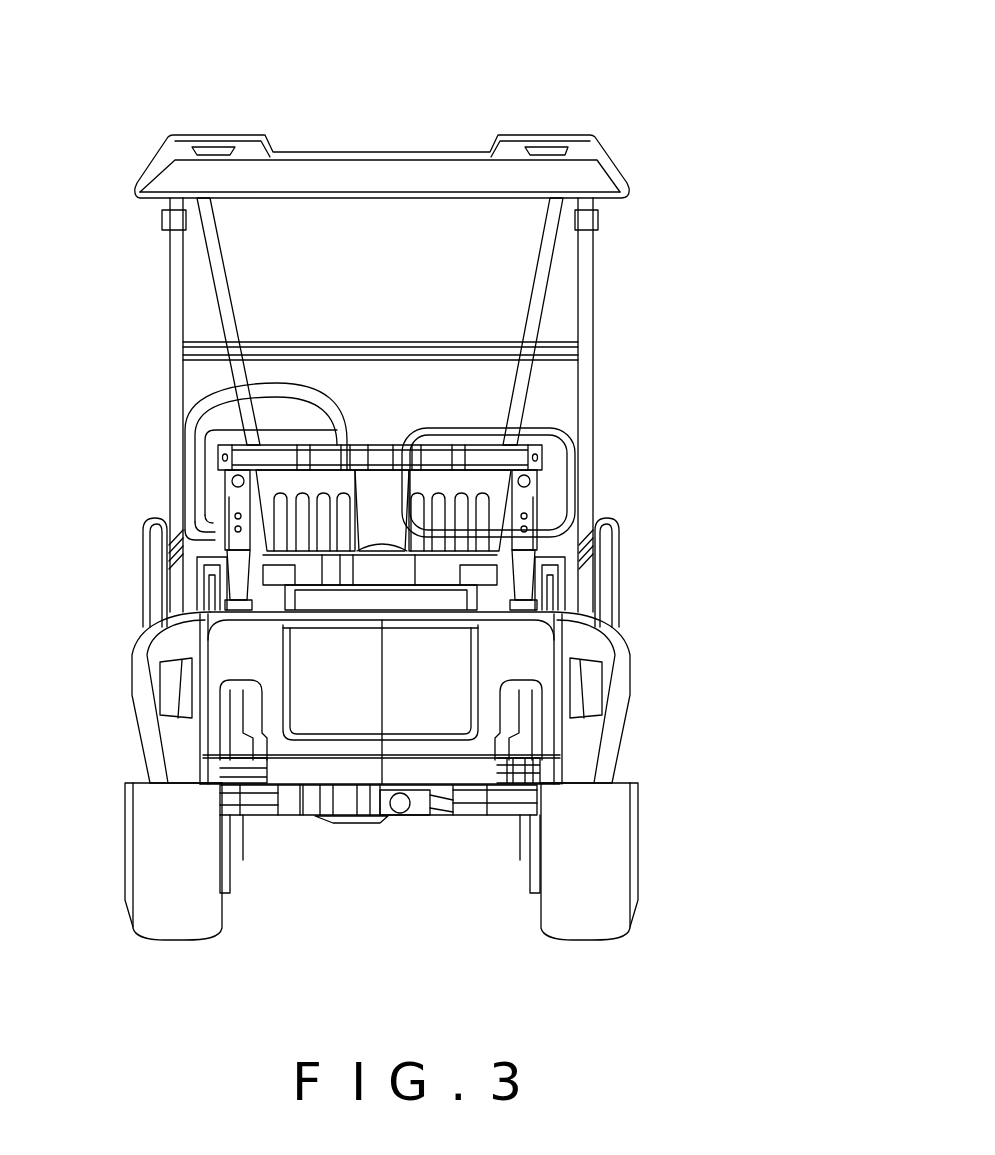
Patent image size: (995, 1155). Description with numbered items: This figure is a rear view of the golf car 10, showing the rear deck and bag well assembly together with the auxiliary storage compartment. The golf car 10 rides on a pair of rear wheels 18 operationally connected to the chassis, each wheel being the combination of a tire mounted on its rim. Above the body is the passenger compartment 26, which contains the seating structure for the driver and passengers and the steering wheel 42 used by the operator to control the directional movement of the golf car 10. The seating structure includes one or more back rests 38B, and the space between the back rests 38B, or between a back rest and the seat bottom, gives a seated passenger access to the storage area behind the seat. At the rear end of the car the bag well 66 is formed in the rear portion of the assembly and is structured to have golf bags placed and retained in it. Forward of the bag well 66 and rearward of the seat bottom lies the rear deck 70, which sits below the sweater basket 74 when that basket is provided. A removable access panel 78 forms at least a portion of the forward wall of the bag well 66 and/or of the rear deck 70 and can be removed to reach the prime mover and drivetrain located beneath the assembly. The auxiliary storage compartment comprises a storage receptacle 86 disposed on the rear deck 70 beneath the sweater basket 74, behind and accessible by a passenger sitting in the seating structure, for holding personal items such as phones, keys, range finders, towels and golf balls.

The golf car 10 is at (652, 80).
The rear wheels 18 is at (125, 848).
The passenger compartment 26 is at (463, 296).
The seating structure back rests 38B is at (208, 460).
The steering wheel 42 is at (297, 380).
The bag well 66 is at (250, 656).
The rear deck 70 is at (248, 585).
The sweater basket 74 is at (267, 498).
The removable access panel 78 is at (417, 697).
The storage receptacle 86 is at (437, 597).